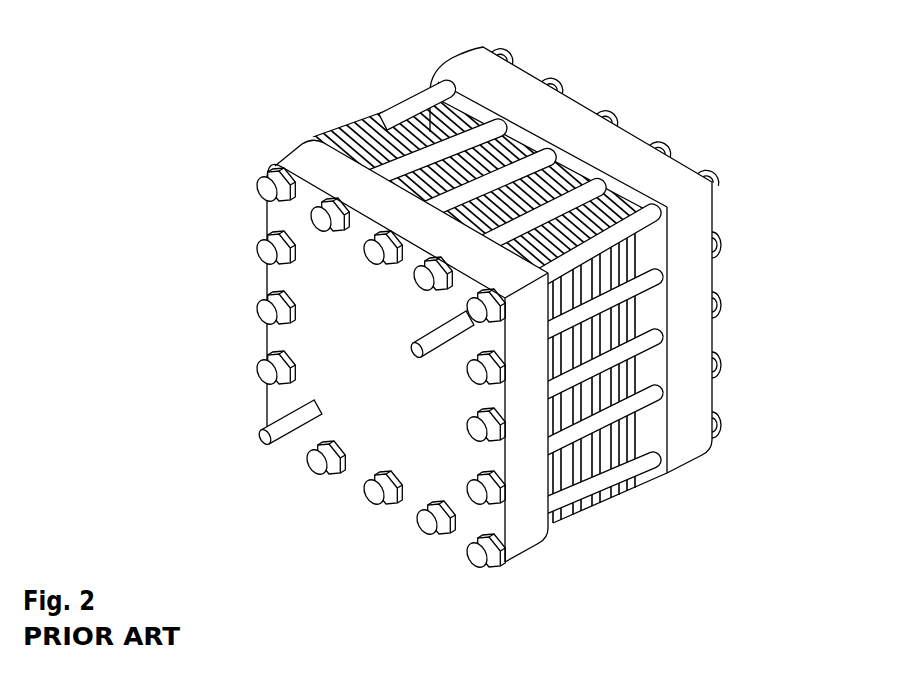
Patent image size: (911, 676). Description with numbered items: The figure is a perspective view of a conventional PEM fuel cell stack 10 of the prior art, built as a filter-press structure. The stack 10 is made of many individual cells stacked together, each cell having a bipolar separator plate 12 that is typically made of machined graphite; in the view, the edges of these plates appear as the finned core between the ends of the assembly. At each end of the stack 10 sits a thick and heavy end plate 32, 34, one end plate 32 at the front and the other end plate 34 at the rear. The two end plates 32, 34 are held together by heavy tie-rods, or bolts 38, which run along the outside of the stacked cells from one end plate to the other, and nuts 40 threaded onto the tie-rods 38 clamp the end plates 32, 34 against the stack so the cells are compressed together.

The fuel cell stack 10 is at (561, 330).
The bipolar separator plate 12 is at (405, 148).
The end plate 32 is at (517, 520).
The end plate 34 is at (688, 440).
The tie-rods 38 is at (478, 132).
The nuts 40 is at (335, 480).